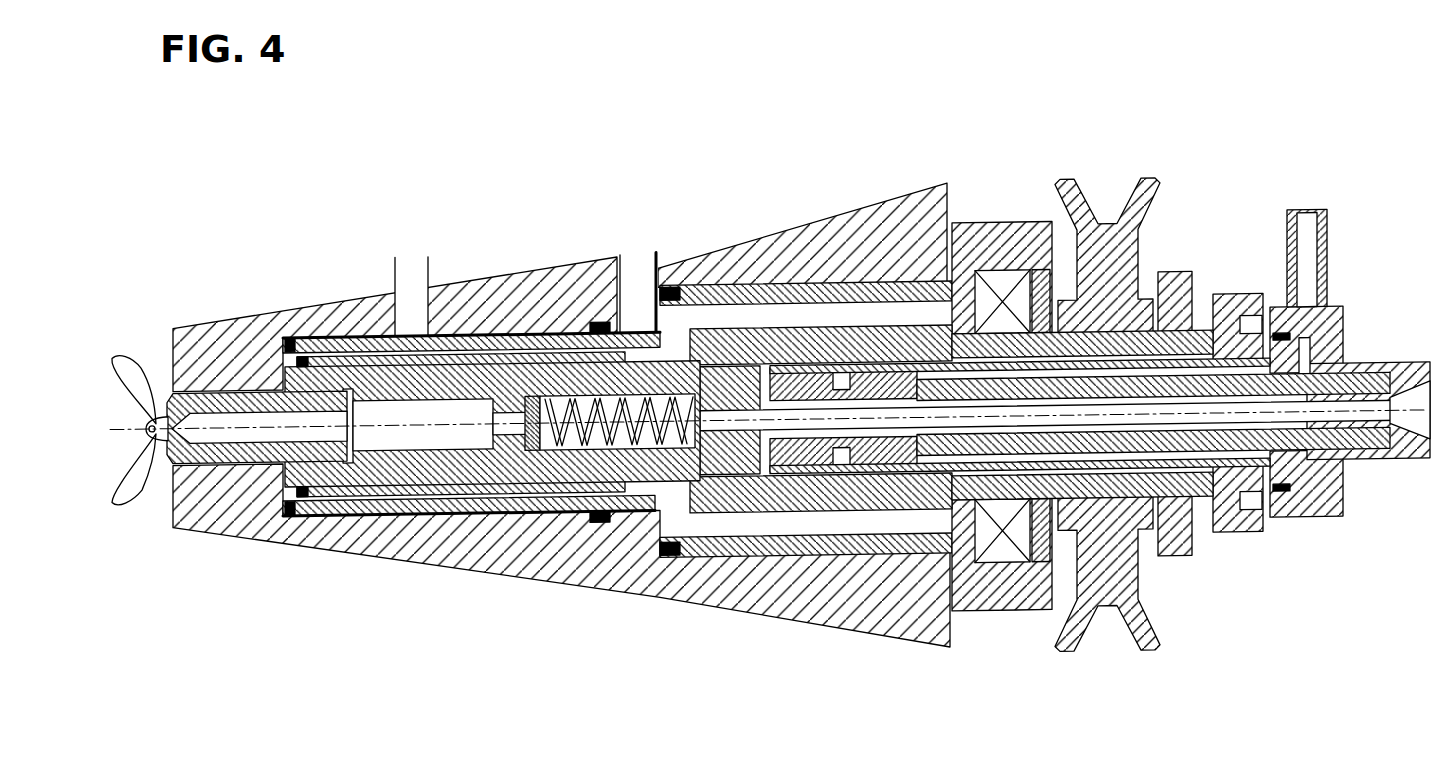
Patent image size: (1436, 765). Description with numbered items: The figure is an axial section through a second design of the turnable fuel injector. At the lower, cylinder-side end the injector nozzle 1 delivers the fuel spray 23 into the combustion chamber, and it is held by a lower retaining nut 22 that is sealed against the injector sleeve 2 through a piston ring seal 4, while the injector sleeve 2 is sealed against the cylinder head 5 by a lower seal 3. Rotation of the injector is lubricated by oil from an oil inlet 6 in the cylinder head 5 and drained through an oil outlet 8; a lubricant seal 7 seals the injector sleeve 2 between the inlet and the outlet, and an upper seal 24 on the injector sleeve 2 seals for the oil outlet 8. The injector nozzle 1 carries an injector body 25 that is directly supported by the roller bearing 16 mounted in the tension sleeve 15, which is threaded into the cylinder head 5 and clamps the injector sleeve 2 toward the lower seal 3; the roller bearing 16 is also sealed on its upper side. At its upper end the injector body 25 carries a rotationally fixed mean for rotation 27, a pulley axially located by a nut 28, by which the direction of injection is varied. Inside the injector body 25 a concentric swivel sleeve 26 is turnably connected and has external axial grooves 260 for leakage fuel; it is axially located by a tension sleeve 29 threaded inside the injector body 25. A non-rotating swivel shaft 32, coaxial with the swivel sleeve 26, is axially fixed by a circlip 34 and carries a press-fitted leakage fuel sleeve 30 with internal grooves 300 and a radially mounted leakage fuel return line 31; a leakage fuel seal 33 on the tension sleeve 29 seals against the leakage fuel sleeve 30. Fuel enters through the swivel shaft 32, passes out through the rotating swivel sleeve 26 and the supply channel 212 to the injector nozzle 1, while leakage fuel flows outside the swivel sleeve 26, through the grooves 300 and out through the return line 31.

The injector nozzle 1 is at (170, 396).
The injector sleeve 2 is at (333, 340).
The lower seal 3 is at (287, 339).
The piston ring seal 4 is at (281, 366).
The cylinder head 5 is at (203, 378).
The oil inlet 6 is at (415, 285).
The lubricant seal 7 is at (597, 331).
The oil outlet 8 is at (637, 293).
The supply channel 212 is at (512, 339).
The lower retaining nut 22 is at (387, 517).
The fuel spray 23 is at (125, 483).
The upper seal 24 is at (673, 293).
The injector body 25 is at (717, 337).
The swivel sleeve 26 is at (857, 369).
The tension sleeve 15 is at (963, 236).
The roller bearing 16 is at (1000, 293).
The mean for rotation 27 is at (1130, 236).
The nut 28 is at (1178, 289).
The tension sleeve 29 is at (1243, 312).
The leakage fuel sleeve 30 is at (1268, 350).
The leakage fuel return line 31 is at (1308, 290).
The axially internal grooves 300 is at (1305, 392).
The swivel shaft 32 is at (1377, 478).
The leakage fuel seal 33 is at (1248, 548).
The circlip 34 is at (760, 451).
The external axial grooves 260 is at (828, 466).